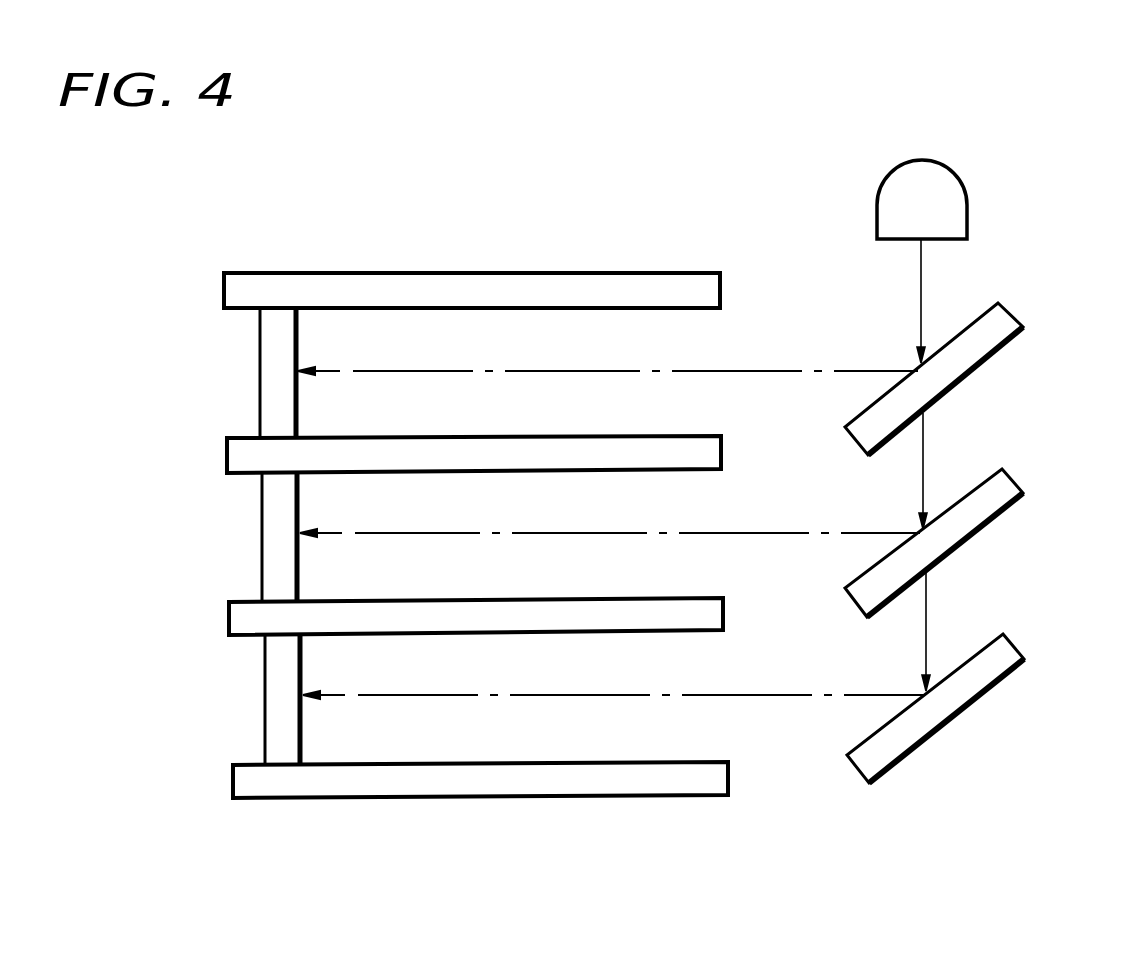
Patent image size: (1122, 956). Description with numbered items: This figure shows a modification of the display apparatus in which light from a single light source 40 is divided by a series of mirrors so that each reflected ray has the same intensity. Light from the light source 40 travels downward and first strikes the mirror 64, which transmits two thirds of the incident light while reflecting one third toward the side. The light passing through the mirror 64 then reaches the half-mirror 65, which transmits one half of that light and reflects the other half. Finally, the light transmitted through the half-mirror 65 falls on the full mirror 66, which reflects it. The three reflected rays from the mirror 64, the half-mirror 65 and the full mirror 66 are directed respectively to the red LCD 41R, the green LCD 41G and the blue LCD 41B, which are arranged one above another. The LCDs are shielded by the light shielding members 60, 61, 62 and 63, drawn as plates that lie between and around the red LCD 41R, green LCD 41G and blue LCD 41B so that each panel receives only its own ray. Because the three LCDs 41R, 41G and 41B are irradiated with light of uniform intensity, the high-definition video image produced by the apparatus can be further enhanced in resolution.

The light source 40 is at (968, 210).
The red LCD 41R is at (259, 375).
The green LCD 41G is at (261, 543).
The blue LCD 41B is at (264, 698).
The light shielding member 60 is at (323, 273).
The light shielding member 61 is at (463, 437).
The light shielding member 62 is at (390, 601).
The light shielding member 63 is at (435, 763).
The mirror 64 is at (1023, 327).
The half-mirror 65 is at (1023, 493).
The full mirror 66 is at (1024, 657).